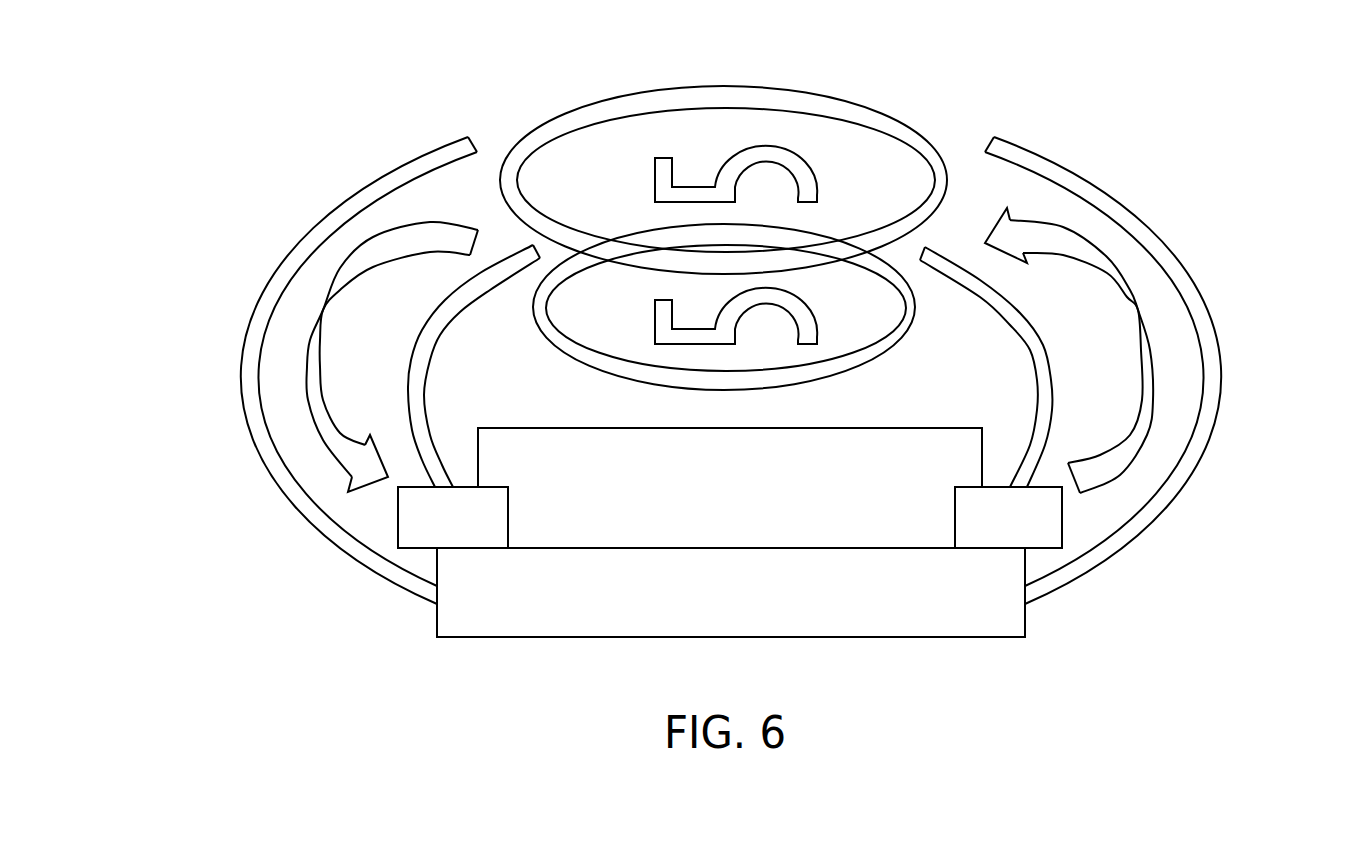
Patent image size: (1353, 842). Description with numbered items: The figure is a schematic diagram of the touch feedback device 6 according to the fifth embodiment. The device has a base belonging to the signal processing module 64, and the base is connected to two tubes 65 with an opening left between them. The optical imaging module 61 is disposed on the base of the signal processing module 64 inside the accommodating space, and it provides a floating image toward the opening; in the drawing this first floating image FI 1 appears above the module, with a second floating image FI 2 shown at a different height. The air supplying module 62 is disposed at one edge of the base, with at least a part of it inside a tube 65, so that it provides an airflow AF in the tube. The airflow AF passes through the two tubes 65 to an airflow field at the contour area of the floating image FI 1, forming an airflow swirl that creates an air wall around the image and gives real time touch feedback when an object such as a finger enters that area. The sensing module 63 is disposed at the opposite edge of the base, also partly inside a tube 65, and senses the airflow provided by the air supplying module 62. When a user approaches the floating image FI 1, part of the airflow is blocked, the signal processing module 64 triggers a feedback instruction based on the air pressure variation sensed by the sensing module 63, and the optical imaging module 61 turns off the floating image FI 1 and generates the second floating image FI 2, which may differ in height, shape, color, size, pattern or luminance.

The touch feedback device 6 is at (161, 70).
The optical imaging module 61 is at (982, 457).
The air supplying module 62 is at (1062, 517).
The sensing module 63 is at (398, 517).
The signal processing module 64 is at (1025, 568).
The tubes 65 is at (242, 360).
The airflow AF is at (400, 230).
The floating image FI 1 is at (903, 122).
The second floating image FI 2 is at (917, 308).